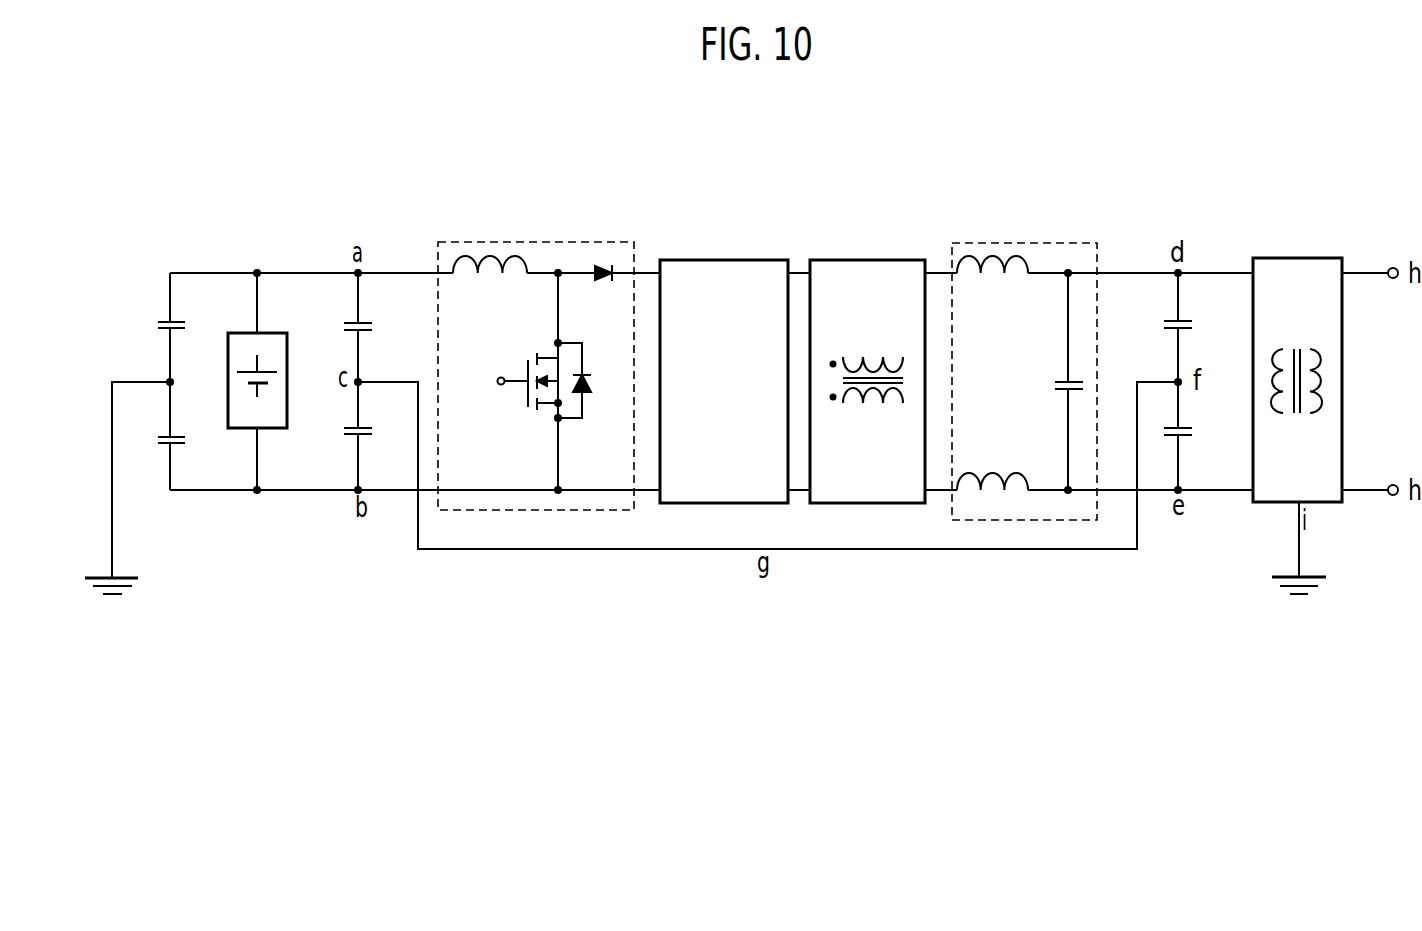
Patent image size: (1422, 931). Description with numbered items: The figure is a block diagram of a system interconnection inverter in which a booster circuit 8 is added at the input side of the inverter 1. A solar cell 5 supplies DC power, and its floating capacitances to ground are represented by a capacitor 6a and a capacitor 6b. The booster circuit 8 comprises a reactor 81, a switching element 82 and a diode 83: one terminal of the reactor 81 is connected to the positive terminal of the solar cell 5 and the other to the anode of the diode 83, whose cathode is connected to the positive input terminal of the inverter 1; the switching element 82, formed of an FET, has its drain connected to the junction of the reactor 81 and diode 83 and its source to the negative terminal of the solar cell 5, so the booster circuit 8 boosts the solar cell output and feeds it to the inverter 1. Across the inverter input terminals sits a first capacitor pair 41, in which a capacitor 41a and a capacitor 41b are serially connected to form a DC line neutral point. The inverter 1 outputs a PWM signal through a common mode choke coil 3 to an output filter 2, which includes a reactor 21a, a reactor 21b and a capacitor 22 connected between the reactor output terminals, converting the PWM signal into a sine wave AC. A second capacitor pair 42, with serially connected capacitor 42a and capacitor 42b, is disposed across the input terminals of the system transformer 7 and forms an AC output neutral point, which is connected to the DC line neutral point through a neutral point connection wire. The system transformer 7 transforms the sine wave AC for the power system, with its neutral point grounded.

The inverter 1 is at (730, 260).
The output filter 2 is at (1063, 243).
The common mode choke coil 3 is at (878, 260).
The solar cell 5 is at (270, 333).
The capacitor 6a is at (162, 320).
The capacitor 6b is at (162, 447).
The system transformer 7 is at (1318, 258).
The booster circuit 8 is at (553, 242).
The reactor 21a is at (1018, 255).
The reactor 21b is at (997, 470).
The capacitor 22 is at (1072, 381).
The first capacitor pair 41 is at (380, 335).
The capacitor 41a is at (366, 323).
The capacitor 41b is at (363, 437).
The second capacitor pair 42 is at (1205, 323).
The capacitor 42a is at (1186, 320).
The capacitor 42b is at (1195, 437).
The reactor 81 is at (498, 255).
The switching element 82 is at (538, 415).
The diode 83 is at (602, 262).